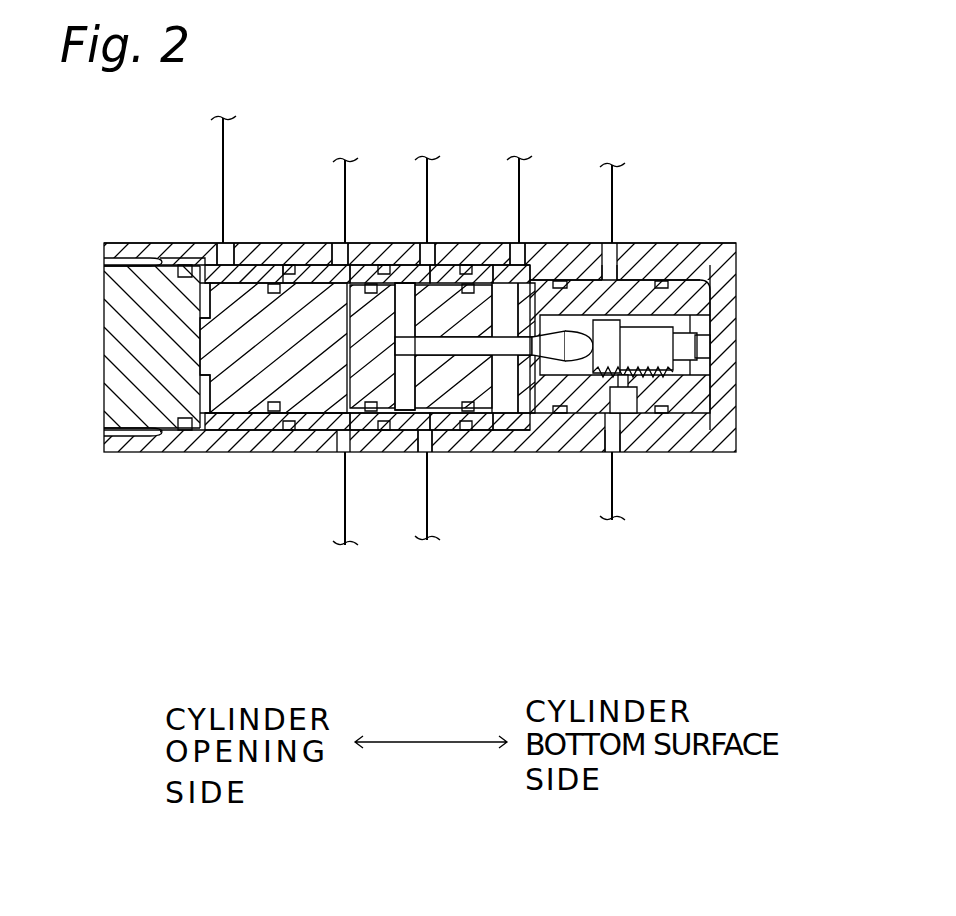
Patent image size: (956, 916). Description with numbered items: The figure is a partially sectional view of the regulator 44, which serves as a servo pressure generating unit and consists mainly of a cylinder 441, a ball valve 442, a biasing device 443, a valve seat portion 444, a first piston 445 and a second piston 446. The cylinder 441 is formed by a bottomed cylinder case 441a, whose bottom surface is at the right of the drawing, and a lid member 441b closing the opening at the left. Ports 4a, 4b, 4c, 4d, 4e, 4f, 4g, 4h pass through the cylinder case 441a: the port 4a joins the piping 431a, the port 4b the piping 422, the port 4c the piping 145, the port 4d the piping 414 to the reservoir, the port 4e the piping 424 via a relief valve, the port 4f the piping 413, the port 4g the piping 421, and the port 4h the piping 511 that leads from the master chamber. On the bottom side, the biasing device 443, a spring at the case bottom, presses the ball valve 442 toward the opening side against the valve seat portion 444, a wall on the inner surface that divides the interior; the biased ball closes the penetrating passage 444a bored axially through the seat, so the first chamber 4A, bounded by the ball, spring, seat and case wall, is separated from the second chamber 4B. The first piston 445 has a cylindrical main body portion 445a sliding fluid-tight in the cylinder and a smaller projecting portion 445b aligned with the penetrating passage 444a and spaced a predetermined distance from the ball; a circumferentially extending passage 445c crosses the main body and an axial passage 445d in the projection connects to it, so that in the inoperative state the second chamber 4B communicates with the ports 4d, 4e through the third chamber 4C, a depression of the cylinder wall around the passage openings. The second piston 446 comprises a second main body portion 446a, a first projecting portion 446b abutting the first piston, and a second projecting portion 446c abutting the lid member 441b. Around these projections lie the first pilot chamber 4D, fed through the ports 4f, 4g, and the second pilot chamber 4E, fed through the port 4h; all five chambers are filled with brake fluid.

The regulator 44 is at (793, 387).
The cylinder 441 is at (742, 268).
The cylinder case 441a is at (690, 265).
The lid member 441b is at (115, 285).
The ball valve 442 is at (620, 430).
The biasing device 443 is at (677, 377).
The valve seat portion 444 is at (543, 320).
The penetrating passage 444a is at (536, 420).
The first piston 445 is at (388, 485).
The main body portion 445a is at (357, 397).
The projecting portion 445b is at (529, 456).
The passage 445c is at (408, 397).
The passage 445d is at (443, 350).
The second piston 446 is at (266, 429).
The second main body portion 446a is at (210, 395).
The first projecting portion 446b is at (240, 378).
The second projecting portion 446c is at (180, 358).
The first chamber 4A is at (690, 322).
The second chamber 4B is at (540, 245).
The third chamber 4C is at (440, 262).
The first pilot chamber 4D is at (287, 262).
The second pilot chamber 4E is at (180, 268).
The port 4a is at (620, 242).
The port 4b is at (613, 447).
The port 4c is at (507, 248).
The port 4d is at (405, 245).
The port 4e is at (430, 455).
The port 4f is at (330, 245).
The port 4g is at (327, 422).
The port 4h is at (218, 243).
The piping 413 is at (348, 183).
The piping 414 is at (427, 180).
The piping 421 is at (345, 532).
The piping 422 is at (612, 497).
The piping 424 is at (427, 530).
The piping 431a is at (612, 192).
The piping 145 is at (519, 180).
The piping 511 is at (227, 150).